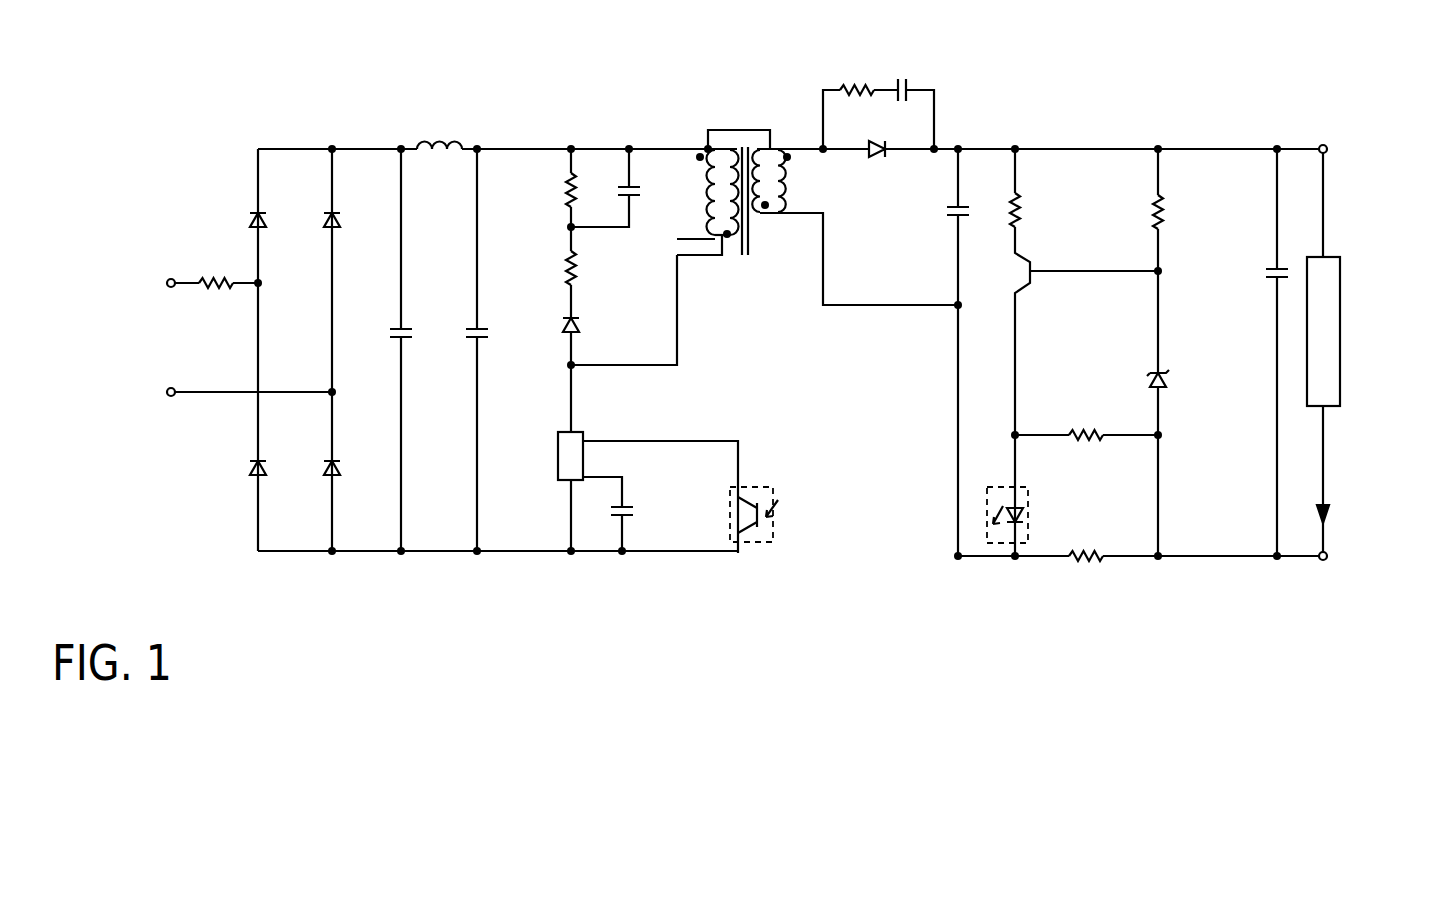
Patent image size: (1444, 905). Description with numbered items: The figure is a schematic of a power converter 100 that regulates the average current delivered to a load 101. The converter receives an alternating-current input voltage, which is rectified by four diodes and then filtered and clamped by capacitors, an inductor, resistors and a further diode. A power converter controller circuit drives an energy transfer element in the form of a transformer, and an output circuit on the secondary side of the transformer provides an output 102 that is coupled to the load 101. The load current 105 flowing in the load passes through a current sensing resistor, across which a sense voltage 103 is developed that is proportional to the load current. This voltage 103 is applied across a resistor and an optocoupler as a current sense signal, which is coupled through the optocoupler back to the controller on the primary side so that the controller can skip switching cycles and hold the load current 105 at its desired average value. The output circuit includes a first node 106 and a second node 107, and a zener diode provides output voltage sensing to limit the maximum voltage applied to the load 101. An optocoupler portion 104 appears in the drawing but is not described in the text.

The power converter 100 is at (300, 79).
The load 101 is at (1330, 412).
The output 102 is at (1278, 102).
The Vsense 103 is at (1043, 615).
The optocoupler LED 104 is at (985, 538).
The I_LOAD 105 is at (1315, 523).
The node 106 is at (942, 143).
The node 107 is at (957, 313).